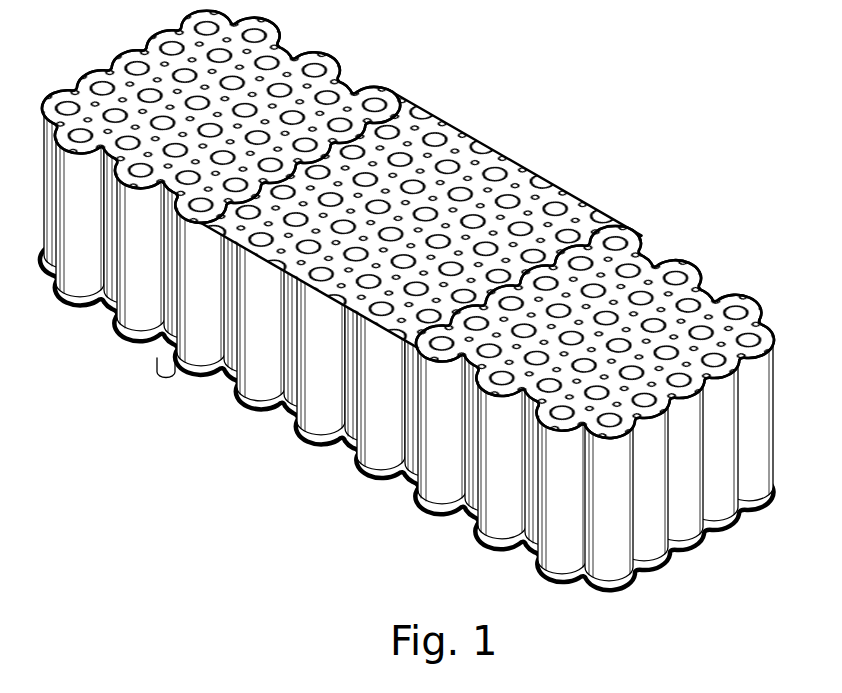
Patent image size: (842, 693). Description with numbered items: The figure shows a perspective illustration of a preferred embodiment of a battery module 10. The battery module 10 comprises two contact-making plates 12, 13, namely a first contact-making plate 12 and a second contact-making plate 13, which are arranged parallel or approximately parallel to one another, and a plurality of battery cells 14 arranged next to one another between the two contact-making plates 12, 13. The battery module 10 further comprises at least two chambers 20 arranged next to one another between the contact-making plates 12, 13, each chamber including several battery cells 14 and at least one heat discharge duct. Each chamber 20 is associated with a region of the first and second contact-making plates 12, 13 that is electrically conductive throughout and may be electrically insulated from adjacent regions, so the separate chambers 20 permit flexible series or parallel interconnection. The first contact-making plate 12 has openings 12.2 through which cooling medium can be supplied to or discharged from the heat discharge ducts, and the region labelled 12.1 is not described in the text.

The battery module 10 is at (407, 300).
The first contact-making plate 12 is at (461, 157).
The first plate section 12.1 is at (557, 206).
The openings 12.2 is at (677, 278).
The second contact-making plate 13 is at (283, 410).
The battery cells 14 is at (207, 346).
The chambers 20 is at (397, 100).